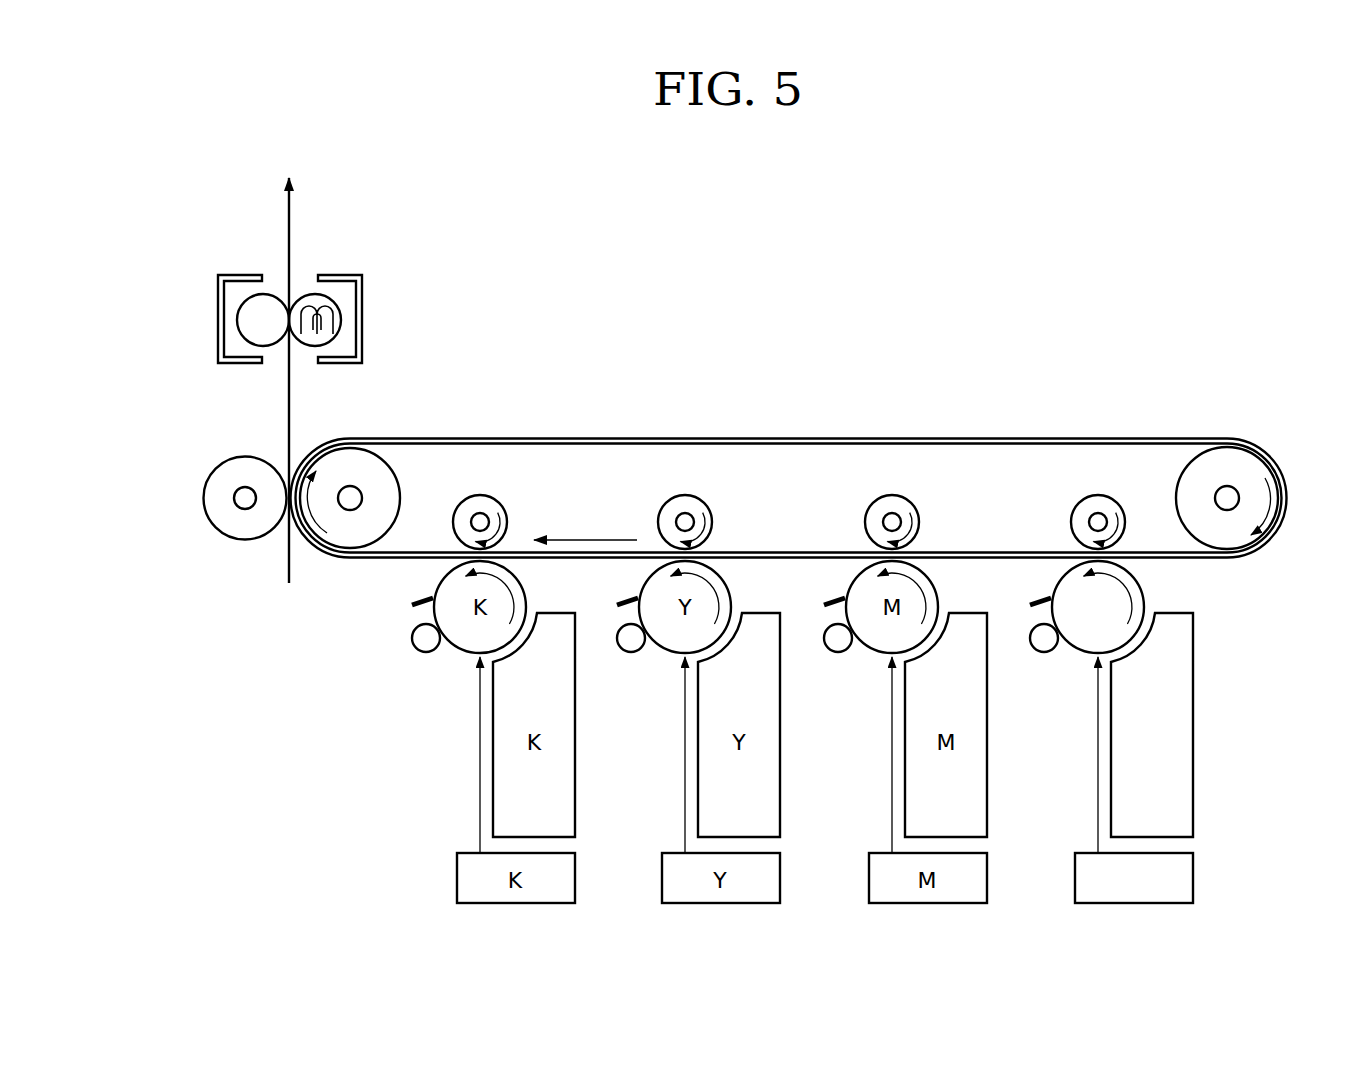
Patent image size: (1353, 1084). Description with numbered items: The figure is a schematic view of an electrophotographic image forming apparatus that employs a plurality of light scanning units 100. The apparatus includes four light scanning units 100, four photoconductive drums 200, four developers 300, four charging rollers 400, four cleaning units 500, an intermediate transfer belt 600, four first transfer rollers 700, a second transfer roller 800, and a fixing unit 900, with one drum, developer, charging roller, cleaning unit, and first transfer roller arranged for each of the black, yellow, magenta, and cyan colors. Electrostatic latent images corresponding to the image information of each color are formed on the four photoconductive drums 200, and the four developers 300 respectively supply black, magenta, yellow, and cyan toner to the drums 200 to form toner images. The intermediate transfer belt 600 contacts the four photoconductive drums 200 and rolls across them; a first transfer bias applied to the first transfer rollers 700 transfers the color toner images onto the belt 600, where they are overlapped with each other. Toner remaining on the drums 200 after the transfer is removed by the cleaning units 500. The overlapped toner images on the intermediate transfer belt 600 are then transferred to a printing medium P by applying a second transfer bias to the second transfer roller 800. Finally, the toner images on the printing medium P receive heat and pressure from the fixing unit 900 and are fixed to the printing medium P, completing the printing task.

The light scanning unit 100 is at (1175, 781).
The photoconductive drum 200 is at (1157, 607).
The developer 300 is at (1185, 725).
The charging roller 400 is at (1043, 670).
The cleaning unit 500 is at (1005, 589).
The intermediate transfer belt 600 is at (789, 443).
The first transfer roller 700 is at (1098, 459).
The second transfer roller 800 is at (204, 498).
The fixing unit 900 is at (206, 328).
The printing medium P is at (289, 405).